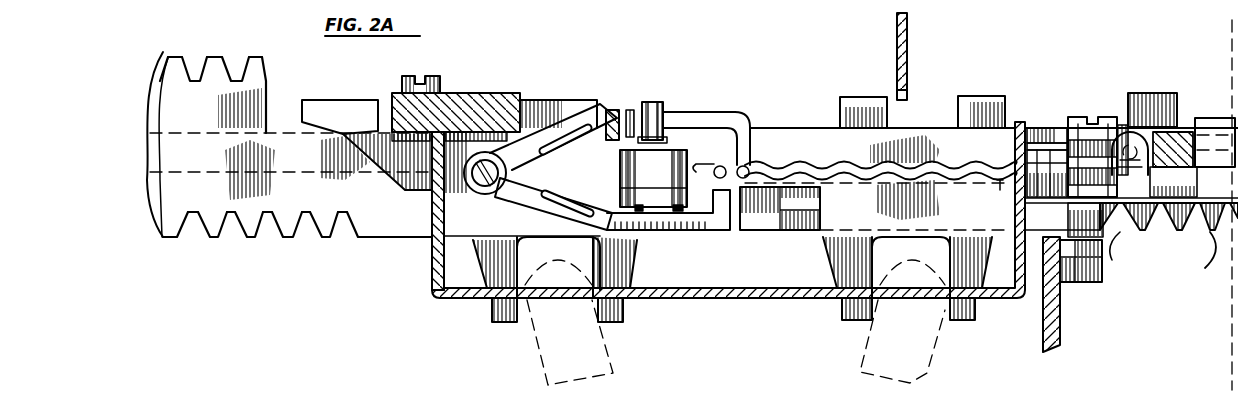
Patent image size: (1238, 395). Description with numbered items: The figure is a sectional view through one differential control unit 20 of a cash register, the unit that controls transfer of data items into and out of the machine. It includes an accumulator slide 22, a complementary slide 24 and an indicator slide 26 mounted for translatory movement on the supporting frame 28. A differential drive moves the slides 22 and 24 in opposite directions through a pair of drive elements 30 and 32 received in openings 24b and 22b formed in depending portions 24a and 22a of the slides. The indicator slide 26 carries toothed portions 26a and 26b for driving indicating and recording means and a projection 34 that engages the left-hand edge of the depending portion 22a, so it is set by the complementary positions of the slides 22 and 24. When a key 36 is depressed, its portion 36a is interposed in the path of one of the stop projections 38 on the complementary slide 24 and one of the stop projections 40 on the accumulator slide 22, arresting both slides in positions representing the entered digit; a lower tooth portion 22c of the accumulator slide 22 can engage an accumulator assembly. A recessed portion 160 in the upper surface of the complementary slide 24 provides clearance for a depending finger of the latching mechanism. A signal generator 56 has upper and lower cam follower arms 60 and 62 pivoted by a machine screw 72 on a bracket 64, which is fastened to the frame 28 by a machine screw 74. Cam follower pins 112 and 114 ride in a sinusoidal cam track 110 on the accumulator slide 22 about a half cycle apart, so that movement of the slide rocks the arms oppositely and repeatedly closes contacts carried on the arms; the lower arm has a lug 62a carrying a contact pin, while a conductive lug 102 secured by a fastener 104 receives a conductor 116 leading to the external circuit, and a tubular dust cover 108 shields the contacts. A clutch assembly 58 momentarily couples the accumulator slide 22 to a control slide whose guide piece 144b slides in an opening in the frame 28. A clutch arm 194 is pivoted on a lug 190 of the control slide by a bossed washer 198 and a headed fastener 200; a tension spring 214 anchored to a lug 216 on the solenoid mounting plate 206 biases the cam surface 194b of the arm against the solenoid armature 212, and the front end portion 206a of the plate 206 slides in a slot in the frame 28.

The differential control unit 20 is at (312, 250).
The accumulator slide 22 is at (797, 128).
The depending portion 22a is at (830, 243).
The opening 22b is at (940, 318).
The lower tooth portion 22c is at (1163, 218).
The complementary slide 24 is at (162, 72).
The depending portion 24a is at (487, 270).
The opening 24b is at (528, 312).
The indicator slide 26 is at (298, 118).
The toothed portion 26a is at (194, 52).
The toothed portion 26b is at (228, 242).
The supporting frame 28 is at (393, 98).
The drive element 30 is at (550, 366).
The drive element 32 is at (914, 373).
The projection 34 is at (808, 202).
The key 36 is at (913, 45).
The key portion 36a is at (897, 98).
The stop projection 38 is at (845, 100).
The stop projection 40 is at (972, 100).
The signal generator 56 is at (665, 64).
The clutch assembly 58 is at (1156, 70).
The upper cam follower arm 60 is at (703, 112).
The lower cam follower arm 62 is at (688, 232).
The outwardly projecting lug 62a is at (652, 250).
The bracket 64 is at (422, 146).
The machine screw 72 is at (484, 204).
The machine screw 74 is at (432, 76).
The electrically conductive lug 102 is at (613, 110).
The internally threaded fastener 104 is at (658, 102).
The tubular dust cover 108 is at (632, 180).
The cam track 110 is at (888, 172).
The cam follower pin 112 is at (747, 164).
The cam follower pin 114 is at (722, 164).
The conductor 116 is at (628, 108).
The guide piece 144b is at (1103, 272).
The recessed portion 160 is at (1182, 128).
The outwardly projecting lug 190 is at (1027, 150).
The clutch arm 194 is at (1065, 140).
The cam surface 194b is at (1146, 170).
The bossed washer 198 is at (1067, 128).
The headed fastener 200 is at (1077, 117).
The plate 206 is at (1208, 248).
The front end portion 206a is at (1012, 193).
The armature 212 is at (1192, 118).
The tension spring 214 is at (1125, 128).
The lug 216 is at (1122, 208).